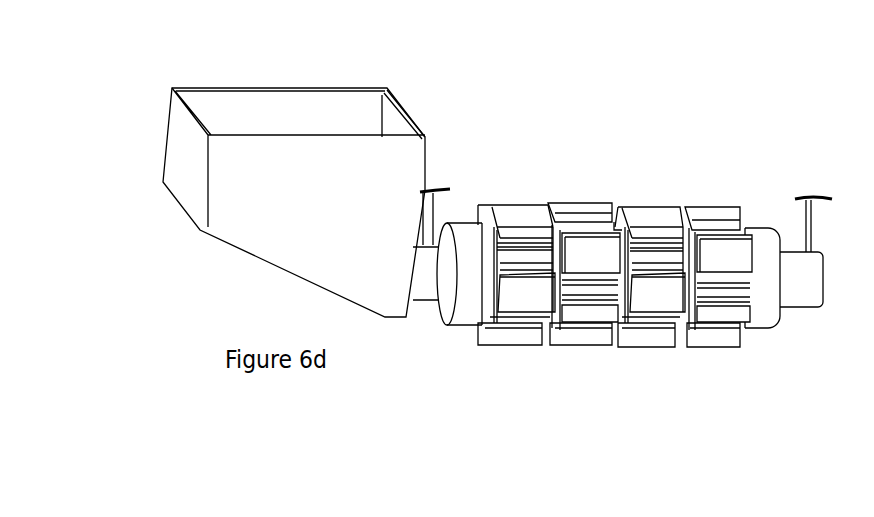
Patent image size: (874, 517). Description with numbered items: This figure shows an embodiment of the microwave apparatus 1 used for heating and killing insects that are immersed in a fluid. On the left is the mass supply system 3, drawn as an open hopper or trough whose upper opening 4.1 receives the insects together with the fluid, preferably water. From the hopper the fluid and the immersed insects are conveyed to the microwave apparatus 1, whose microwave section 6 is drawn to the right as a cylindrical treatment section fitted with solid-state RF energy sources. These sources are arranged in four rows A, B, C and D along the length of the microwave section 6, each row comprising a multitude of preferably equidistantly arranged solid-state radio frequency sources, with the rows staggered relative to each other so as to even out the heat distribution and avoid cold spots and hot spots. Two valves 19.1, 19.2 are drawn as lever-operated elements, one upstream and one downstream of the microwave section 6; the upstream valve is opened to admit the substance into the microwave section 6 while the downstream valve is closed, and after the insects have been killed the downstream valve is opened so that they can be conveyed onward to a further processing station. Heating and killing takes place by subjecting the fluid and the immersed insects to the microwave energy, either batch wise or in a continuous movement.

The microwave apparatus 1 is at (636, 217).
The microwave section 6 is at (636, 217).
The mass supply system 3 is at (180, 97).
The hopper opening 4.1 is at (272, 118).
The first lever 19.1 is at (439, 181).
The second lever 19.2 is at (810, 190).
The solid-state RF energy source A is at (521, 223).
The solid-state RF energy source B is at (587, 223).
The solid-state RF energy source C is at (657, 222).
The solid-state RF energy source D is at (718, 222).